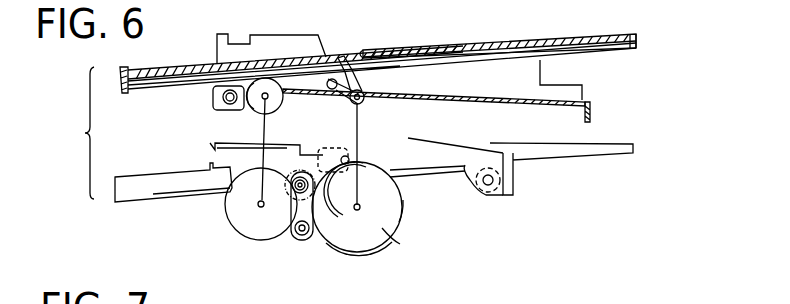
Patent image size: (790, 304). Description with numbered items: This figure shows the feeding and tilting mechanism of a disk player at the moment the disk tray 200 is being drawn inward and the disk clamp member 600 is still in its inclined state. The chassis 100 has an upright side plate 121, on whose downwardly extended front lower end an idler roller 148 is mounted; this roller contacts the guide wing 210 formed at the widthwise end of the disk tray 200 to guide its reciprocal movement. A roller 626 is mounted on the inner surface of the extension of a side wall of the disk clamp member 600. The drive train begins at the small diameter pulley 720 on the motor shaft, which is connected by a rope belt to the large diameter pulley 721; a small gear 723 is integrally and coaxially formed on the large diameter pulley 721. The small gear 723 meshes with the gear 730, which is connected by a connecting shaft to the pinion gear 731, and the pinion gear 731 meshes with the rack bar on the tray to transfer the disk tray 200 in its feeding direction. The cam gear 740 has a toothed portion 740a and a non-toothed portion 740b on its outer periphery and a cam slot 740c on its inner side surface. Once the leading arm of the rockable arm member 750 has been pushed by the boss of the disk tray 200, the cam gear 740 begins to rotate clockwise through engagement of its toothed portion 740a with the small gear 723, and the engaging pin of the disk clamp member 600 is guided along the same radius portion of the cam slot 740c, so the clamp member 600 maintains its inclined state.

In FIG. 6, the chassis 100 is at (491, 100).
In FIG. 6, the side plate 121 is at (285, 47).
In FIG. 6, the idler roller 148 is at (222, 113).
In FIG. 6, the disk tray 200 is at (590, 34).
In FIG. 7, the disk tray 200 is at (576, 296).
In FIG. 6, the guide wing 210 is at (165, 200).
In FIG. 6, the disk clamp member 600 is at (445, 162).
In FIG. 6, the roller 626 is at (490, 193).
In FIG. 6, the small diameter pulley 720 is at (302, 236).
In FIG. 6, the large diameter pulley 721 is at (232, 166).
In FIG. 6, the small gear 723 is at (290, 150).
In FIG. 6, the gear 730 is at (253, 225).
In FIG. 6, the pinion gear 731 is at (253, 109).
In FIG. 6, the cam gear 740 is at (399, 208).
In FIG. 6, the toothed portion 740a is at (355, 258).
In FIG. 6, the non-toothed portion 740b is at (399, 213).
In FIG. 6, the cam slot 740c is at (368, 152).
In FIG. 6, the rockable arm member 750 is at (336, 90).